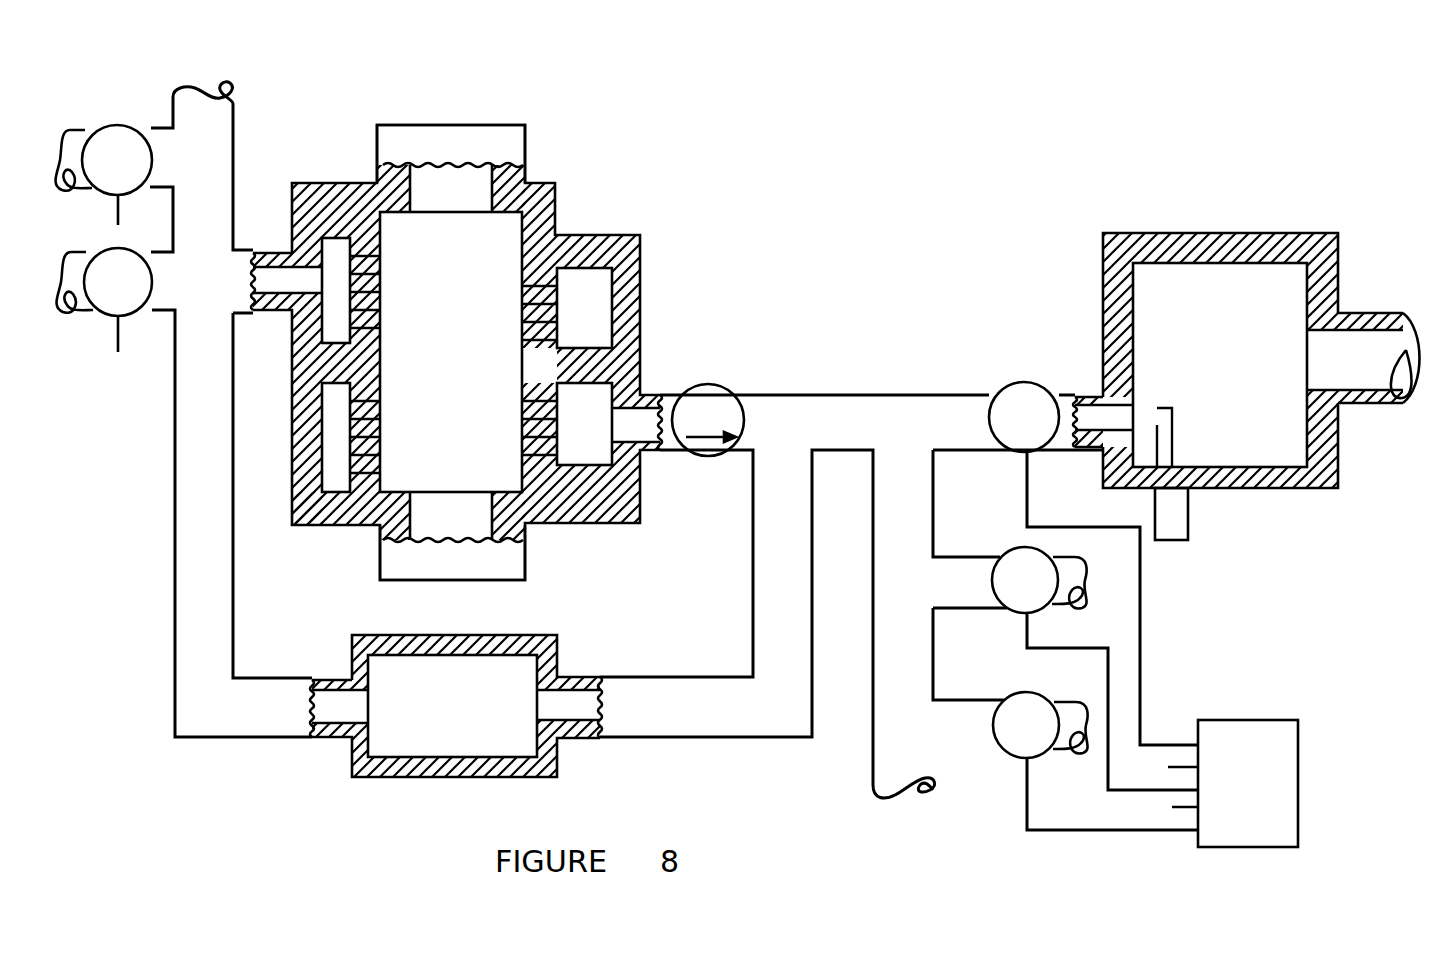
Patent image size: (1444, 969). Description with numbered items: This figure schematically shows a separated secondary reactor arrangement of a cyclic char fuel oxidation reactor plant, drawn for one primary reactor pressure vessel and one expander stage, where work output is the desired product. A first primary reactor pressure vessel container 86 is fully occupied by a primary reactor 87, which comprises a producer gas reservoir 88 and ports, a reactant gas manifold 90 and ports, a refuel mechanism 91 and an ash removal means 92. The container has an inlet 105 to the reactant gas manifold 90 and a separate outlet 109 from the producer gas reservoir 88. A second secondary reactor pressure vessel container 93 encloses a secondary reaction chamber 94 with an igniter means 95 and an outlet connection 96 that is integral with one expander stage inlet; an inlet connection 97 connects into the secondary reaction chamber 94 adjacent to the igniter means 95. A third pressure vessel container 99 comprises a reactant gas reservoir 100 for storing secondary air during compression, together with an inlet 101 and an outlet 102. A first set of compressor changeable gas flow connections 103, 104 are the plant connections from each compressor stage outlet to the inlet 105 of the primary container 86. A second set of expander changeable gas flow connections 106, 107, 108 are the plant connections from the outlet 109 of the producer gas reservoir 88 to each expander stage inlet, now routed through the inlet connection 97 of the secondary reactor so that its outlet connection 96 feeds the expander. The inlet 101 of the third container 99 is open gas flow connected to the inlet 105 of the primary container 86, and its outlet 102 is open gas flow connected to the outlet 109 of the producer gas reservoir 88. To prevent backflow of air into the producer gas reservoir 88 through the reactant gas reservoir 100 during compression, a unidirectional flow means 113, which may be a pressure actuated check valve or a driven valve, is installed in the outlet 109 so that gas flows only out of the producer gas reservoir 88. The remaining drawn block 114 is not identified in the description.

The first primary reactor pressure vessel container 86 is at (543, 203).
The primary reactor 87 is at (458, 265).
The producer gas reservoir 88 is at (335, 443).
The reactant gas manifold 90 is at (335, 262).
The refuel mechanism 91 is at (448, 147).
The ash removal means 92 is at (495, 558).
The second secondary reactor pressure vessel container 93 is at (1282, 468).
The secondary reaction chamber 94 is at (1245, 290).
The igniter means 95 is at (1190, 517).
The outlet connection 96 is at (1363, 347).
The inlet connection 97 is at (1113, 420).
The third pressure vessel container 99 is at (393, 780).
The reactant gas reservoir 100 is at (461, 731).
The third pressure vessel container inlet 101 is at (345, 707).
The third pressure vessel container outlet 102 is at (572, 707).
The compressor changeable gas flow connection 103 is at (118, 123).
The compressor changeable gas flow connection 104 is at (140, 317).
The inlet 105 is at (280, 287).
The expander changeable gas flow connection 106 is at (1005, 450).
The expander changeable gas flow connection 107 is at (1007, 617).
The expander changeable gas flow connection 108 is at (1007, 763).
The outlet 109 is at (640, 423).
The unidirectional flow means 113 is at (697, 458).
The control unit 114 is at (1298, 752).